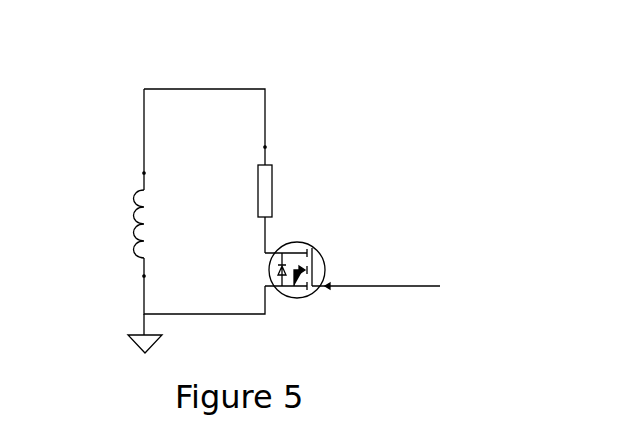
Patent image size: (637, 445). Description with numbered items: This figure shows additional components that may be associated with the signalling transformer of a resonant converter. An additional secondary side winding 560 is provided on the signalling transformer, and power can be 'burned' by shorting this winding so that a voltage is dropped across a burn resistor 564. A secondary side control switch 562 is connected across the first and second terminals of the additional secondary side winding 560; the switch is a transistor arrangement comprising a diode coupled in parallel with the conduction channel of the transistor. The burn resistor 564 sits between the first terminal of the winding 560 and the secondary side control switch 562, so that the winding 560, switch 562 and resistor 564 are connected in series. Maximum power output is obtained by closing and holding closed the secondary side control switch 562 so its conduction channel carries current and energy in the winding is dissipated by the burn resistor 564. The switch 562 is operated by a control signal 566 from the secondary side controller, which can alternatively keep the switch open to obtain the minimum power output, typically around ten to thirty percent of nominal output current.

The additional secondary side winding 560 is at (137, 231).
The secondary side control switch 562 is at (299, 297).
The burn resistor 564 is at (272, 165).
The control signal 566 is at (415, 286).